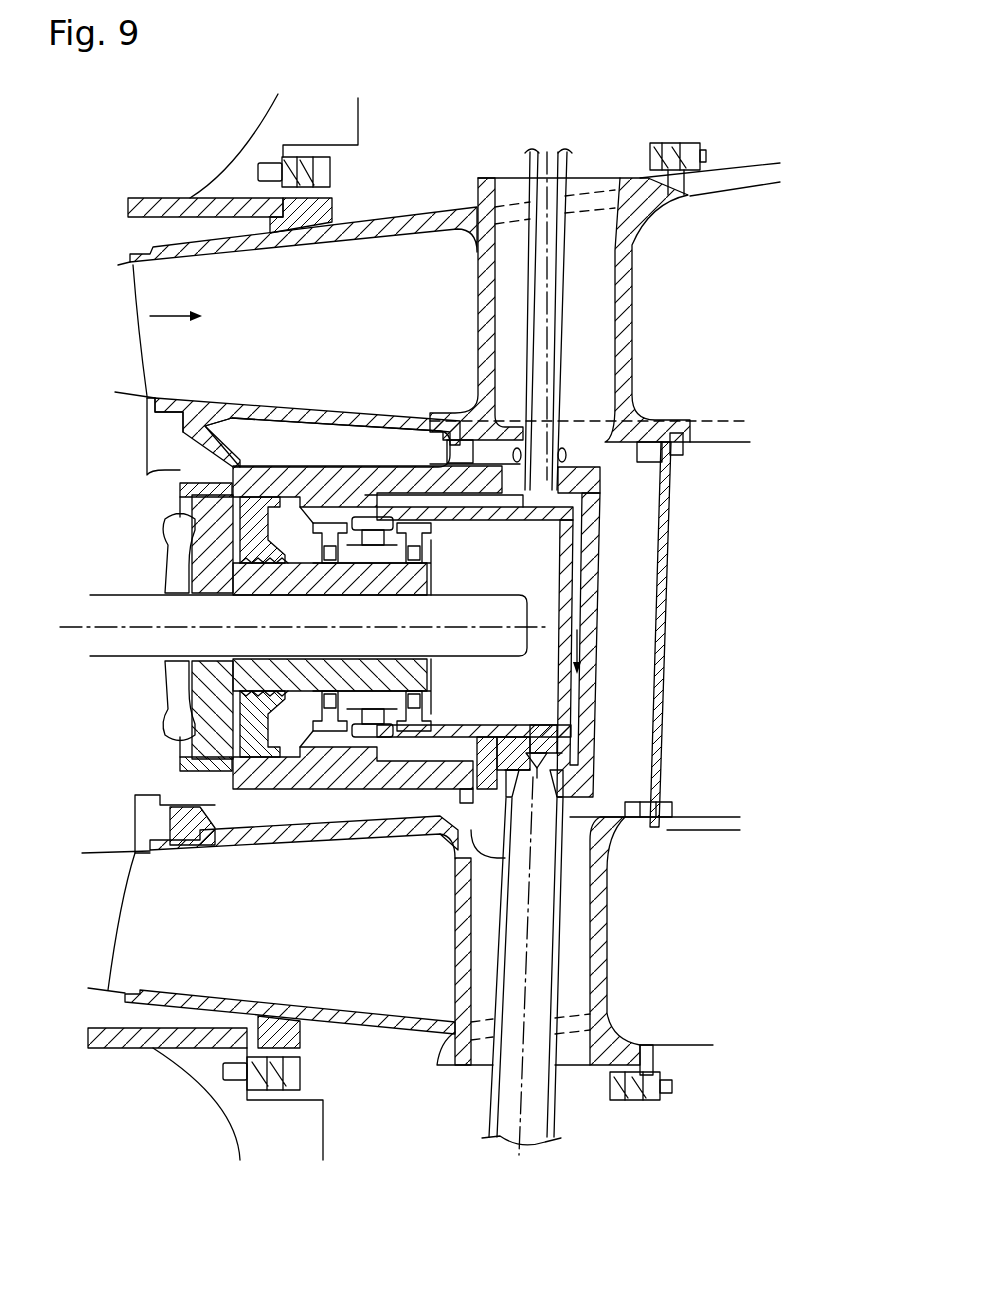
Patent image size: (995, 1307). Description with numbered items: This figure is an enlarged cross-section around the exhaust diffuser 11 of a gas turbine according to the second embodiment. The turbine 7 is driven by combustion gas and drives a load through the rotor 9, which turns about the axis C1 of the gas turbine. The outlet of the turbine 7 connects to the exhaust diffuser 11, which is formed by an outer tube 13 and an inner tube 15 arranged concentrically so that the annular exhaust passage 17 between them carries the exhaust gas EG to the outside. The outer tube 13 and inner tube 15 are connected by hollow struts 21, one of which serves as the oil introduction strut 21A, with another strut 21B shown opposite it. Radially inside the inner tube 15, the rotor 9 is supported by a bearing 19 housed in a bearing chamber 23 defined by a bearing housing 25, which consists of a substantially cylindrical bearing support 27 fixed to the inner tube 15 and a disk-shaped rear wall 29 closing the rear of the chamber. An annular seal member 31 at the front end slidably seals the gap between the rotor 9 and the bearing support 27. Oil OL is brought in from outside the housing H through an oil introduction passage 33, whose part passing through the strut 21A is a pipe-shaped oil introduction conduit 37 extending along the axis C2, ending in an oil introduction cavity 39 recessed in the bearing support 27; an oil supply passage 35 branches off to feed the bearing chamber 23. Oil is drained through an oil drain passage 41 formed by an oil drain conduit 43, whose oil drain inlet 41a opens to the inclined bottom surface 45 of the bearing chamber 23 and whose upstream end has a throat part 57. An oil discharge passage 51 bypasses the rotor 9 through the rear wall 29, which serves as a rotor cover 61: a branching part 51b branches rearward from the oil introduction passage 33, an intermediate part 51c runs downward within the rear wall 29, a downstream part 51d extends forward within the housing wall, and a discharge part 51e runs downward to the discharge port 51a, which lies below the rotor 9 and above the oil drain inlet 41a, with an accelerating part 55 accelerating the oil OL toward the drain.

The housing H is at (272, 116).
The exhaust gas EG is at (170, 315).
The oil OL is at (580, 656).
The axis C1 is at (78, 626).
The axis of oil introduction passage C2 is at (548, 318).
The turbine 7 is at (160, 437).
The rotor 9 is at (125, 657).
The exhaust diffuser 11 is at (297, 264).
The outer tube 13 is at (347, 238).
The inner tube 15 is at (352, 399).
The exhaust passage 17 is at (266, 340).
The bearing 19 is at (258, 732).
The strut 21 is at (605, 621).
The oil introduction strut 21A is at (624, 255).
The lower housing 21B is at (607, 916).
The bearing chamber 23 is at (530, 560).
The bearing housing 25 is at (610, 514).
The bearing support 27 is at (228, 485).
The rear wall 29 is at (691, 630).
The seal member 31 is at (258, 522).
The oil introduction passage 33 is at (628, 319).
The oil supply passage 35 is at (405, 465).
The oil introduction conduit 37 is at (564, 279).
The oil introduction cavity 39 is at (553, 437).
The oil drain passage 41 is at (608, 957).
The oil drain inlet 41a is at (563, 769).
The oil drain conduit 43 is at (538, 976).
The bottom surface 45 is at (232, 768).
The oil discharge passage 51 is at (586, 618).
The discharge port 51a is at (560, 750).
The branching part 51b is at (592, 483).
The intermediate part 51c is at (580, 652).
The downstream part 51d is at (548, 733).
The discharge part 51e is at (510, 740).
The accelerating part 55 is at (485, 752).
The throat part 57 is at (470, 852).
The rotor cover 61 is at (666, 630).